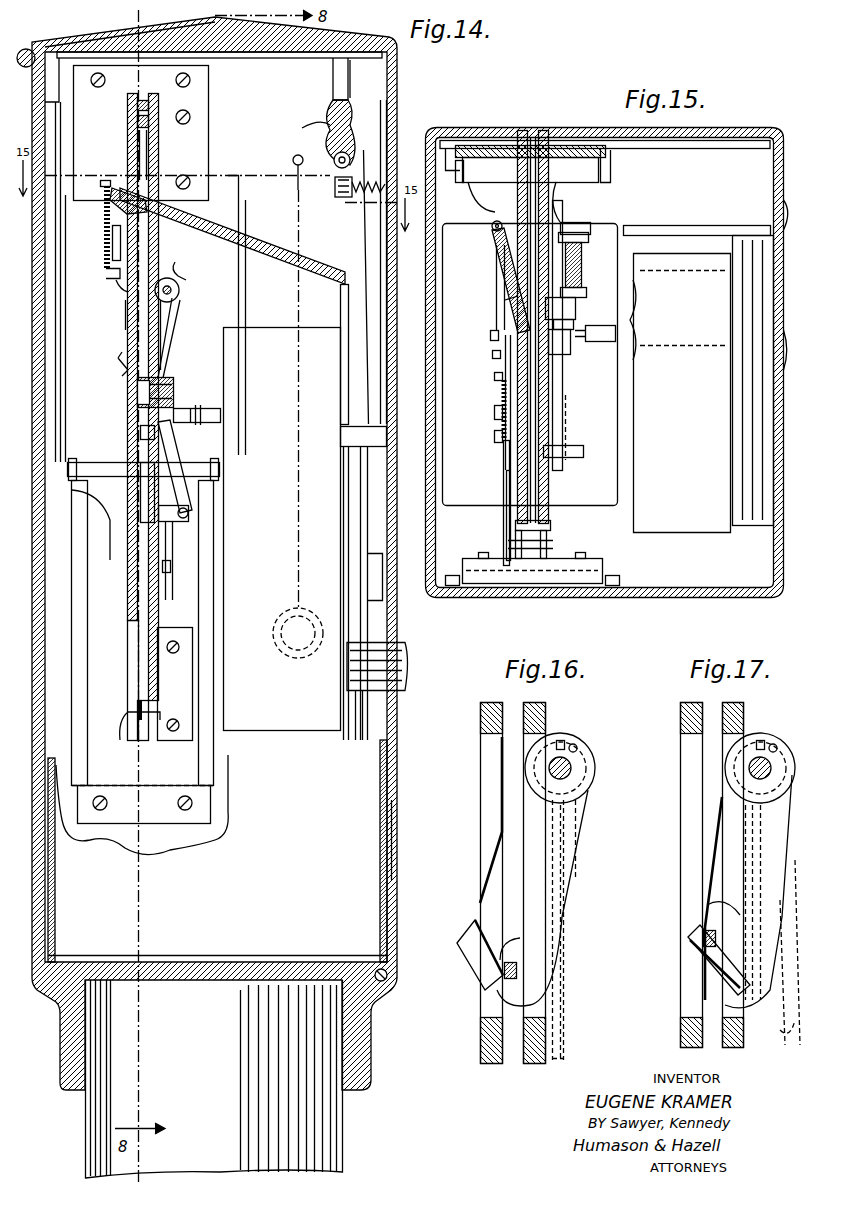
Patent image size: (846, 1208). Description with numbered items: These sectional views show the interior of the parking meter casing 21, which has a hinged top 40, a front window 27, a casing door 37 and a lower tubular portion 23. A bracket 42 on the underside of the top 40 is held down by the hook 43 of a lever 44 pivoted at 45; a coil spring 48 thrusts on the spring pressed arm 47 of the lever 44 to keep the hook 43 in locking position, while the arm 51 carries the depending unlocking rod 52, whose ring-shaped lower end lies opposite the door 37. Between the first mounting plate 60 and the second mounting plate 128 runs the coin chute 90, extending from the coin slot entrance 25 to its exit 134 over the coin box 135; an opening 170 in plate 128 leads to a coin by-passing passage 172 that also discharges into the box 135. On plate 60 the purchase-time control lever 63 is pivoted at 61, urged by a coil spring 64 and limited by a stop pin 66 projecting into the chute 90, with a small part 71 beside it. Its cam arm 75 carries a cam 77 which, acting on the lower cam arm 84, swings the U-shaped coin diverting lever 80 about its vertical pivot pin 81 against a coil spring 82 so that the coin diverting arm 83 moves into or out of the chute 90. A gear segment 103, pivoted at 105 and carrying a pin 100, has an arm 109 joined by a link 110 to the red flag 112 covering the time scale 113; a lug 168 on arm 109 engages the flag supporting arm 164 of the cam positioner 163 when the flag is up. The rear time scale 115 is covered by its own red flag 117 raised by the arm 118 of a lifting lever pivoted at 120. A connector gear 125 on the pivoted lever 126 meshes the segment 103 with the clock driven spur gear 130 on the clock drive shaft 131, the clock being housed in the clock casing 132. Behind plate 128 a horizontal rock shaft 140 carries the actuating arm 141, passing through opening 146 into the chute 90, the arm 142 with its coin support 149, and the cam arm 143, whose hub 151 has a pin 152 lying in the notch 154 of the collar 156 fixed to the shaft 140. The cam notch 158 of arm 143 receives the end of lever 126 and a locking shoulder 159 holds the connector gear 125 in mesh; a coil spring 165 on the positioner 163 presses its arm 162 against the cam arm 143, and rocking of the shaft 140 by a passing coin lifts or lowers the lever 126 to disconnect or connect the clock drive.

In FIG. 14, the meter casing 21 is at (66, 1040).
In FIG. 15, the meter casing 21 is at (655, 596).
In FIG. 14, the outlet tube 23 is at (214, 1079).
In FIG. 15, the coin slot entrance 25 is at (528, 130).
In FIG. 14, the front window 27 is at (66, 205).
In FIG. 15, the front window 27 is at (605, 135).
In FIG. 14, the casing door 37 is at (398, 848).
In FIG. 15, the casing door 37 is at (780, 210).
In FIG. 14, the hinged top 40 is at (112, 40).
In FIG. 14, the bracket 42 is at (338, 74).
In FIG. 14, the hook 43 is at (352, 105).
In FIG. 14, the lever 44 is at (299, 123).
In FIG. 14, the pivot 45 is at (340, 160).
In FIG. 14, the spring pressed arm 47 is at (328, 186).
In FIG. 14, the spring 48 is at (366, 195).
In FIG. 14, the arm 51 is at (292, 157).
In FIG. 14, the unlocking rod 52 is at (295, 212).
In FIG. 14, the first mounting plate 60 is at (128, 100).
In FIG. 15, the first mounting plate 60 is at (515, 198).
In FIG. 16, the first mounting plate 60 is at (479, 715).
In FIG. 17, the first mounting plate 60 is at (679, 706).
In FIG. 15, the pivot 61 is at (494, 378).
In FIG. 15, the purchase-time control lever 63 is at (500, 392).
In FIG. 15, the coil spring 64 is at (496, 414).
In FIG. 15, the stop pin 66 is at (568, 408).
In FIG. 15, the pin 71 is at (484, 329).
In FIG. 14, the cam arm 75 is at (122, 290).
In FIG. 15, the cam arm 75 is at (506, 343).
In FIG. 14, the cam 77 is at (112, 240).
In FIG. 15, the cam 77 is at (500, 258).
In FIG. 14, the coin diverting lever 80 is at (104, 186).
In FIG. 14, the vertical pivot pin 81 is at (105, 207).
In FIG. 15, the vertical pivot pin 81 is at (492, 230).
In FIG. 14, the coil spring 82 is at (108, 222).
In FIG. 14, the coin diverting arm 83 is at (150, 190).
In FIG. 15, the coin diverting arm 83 is at (500, 290).
In FIG. 14, the cam arm 84 is at (112, 268).
In FIG. 15, the cam arm 84 is at (505, 285).
In FIG. 14, the coin chute 90 is at (128, 150).
In FIG. 15, the coin chute 90 is at (545, 140).
In FIG. 15, the pin 100 is at (494, 358).
In FIG. 14, the gear segment 103 is at (146, 436).
In FIG. 14, the pivot 105 is at (130, 462).
In FIG. 14, the arm 109 is at (160, 490).
In FIG. 14, the link 110 is at (175, 560).
In FIG. 15, the link 110 is at (558, 200).
In FIG. 14, the cover slide or red flag 112 is at (200, 585).
In FIG. 15, the cover slide or red flag 112 is at (606, 150).
In FIG. 14, the time scale 113 is at (165, 810).
In FIG. 15, the time scale 113 is at (600, 168).
In FIG. 15, the time scale 115 is at (560, 558).
In FIG. 15, the time scale cover or red flag 117 is at (605, 562).
In FIG. 15, the right hand arm 118 is at (503, 520).
In FIG. 15, the pivot 120 is at (496, 436).
In FIG. 14, the connector gear 125 is at (136, 405).
In FIG. 14, the lever 126 is at (136, 393).
In FIG. 16, the lever 126 is at (502, 975).
In FIG. 17, the lever 126 is at (702, 936).
In FIG. 14, the second mounting plate 128 is at (150, 100).
In FIG. 15, the second mounting plate 128 is at (582, 220).
In FIG. 16, the second mounting plate 128 is at (546, 703).
In FIG. 17, the second mounting plate 128 is at (744, 704).
In FIG. 14, the clock driven spur gear 130 is at (178, 402).
In FIG. 14, the clock drive shaft 131 is at (196, 410).
In FIG. 15, the clock drive shaft 131 is at (616, 335).
In FIG. 14, the clock casing 132 is at (272, 715).
In FIG. 15, the clock casing 132 is at (680, 393).
In FIG. 14, the coin passage exit 134 is at (143, 740).
In FIG. 14, the coin receiving box or drawer 135 is at (217, 925).
In FIG. 15, the coin receiving box or drawer 135 is at (688, 220).
In FIG. 14, the rock shaft 140 is at (132, 316).
In FIG. 15, the rock shaft 140 is at (560, 388).
In FIG. 16, the rock shaft 140 is at (548, 768).
In FIG. 17, the rock shaft 140 is at (748, 768).
In FIG. 15, the rock shaft actuating arm 141 is at (560, 452).
In FIG. 14, the arm 142 is at (176, 684).
In FIG. 16, the arm 142 is at (568, 1016).
In FIG. 17, the arm 142 is at (777, 934).
In FIG. 14, the cam arm 143 is at (165, 320).
In FIG. 16, the cam arm 143 is at (580, 828).
In FIG. 17, the cam arm 143 is at (735, 850).
In FIG. 15, the opening 146 is at (518, 470).
In FIG. 14, the coin support 149 is at (134, 706).
In FIG. 14, the hub 151 is at (183, 288).
In FIG. 15, the hub 151 is at (576, 310).
In FIG. 16, the hub 151 is at (590, 758).
In FIG. 17, the hub 151 is at (776, 790).
In FIG. 14, the projecting pin 152 is at (190, 278).
In FIG. 15, the projecting pin 152 is at (575, 322).
In FIG. 16, the projecting pin 152 is at (577, 745).
In FIG. 17, the projecting pin 152 is at (775, 745).
In FIG. 14, the notch 154 is at (186, 262).
In FIG. 16, the notch 154 is at (562, 740).
In FIG. 17, the notch 154 is at (760, 740).
In FIG. 14, the collar 156 is at (176, 305).
In FIG. 15, the collar 156 is at (563, 350).
In FIG. 16, the collar 156 is at (575, 782).
In FIG. 17, the collar 156 is at (748, 780).
In FIG. 14, the cam notch 158 is at (122, 362).
In FIG. 16, the cam notch 158 is at (472, 920).
In FIG. 17, the cam notch 158 is at (700, 962).
In FIG. 16, the locking shoulder 159 is at (525, 940).
In FIG. 17, the locking shoulder 159 is at (705, 905).
In FIG. 14, the cam positioning arm 162 is at (178, 462).
In FIG. 14, the cam positioner and flag support 163 is at (190, 515).
In FIG. 15, the cam positioner and flag support 163 is at (583, 282).
In FIG. 15, the flag supporting arm 164 is at (582, 232).
In FIG. 15, the coil spring 165 is at (582, 252).
In FIG. 14, the lug 168 is at (172, 566).
In FIG. 14, the opening 170 is at (153, 222).
In FIG. 14, the coin by-passing passage 172 is at (272, 290).
In FIG. 15, the coin by-passing passage 172 is at (700, 236).